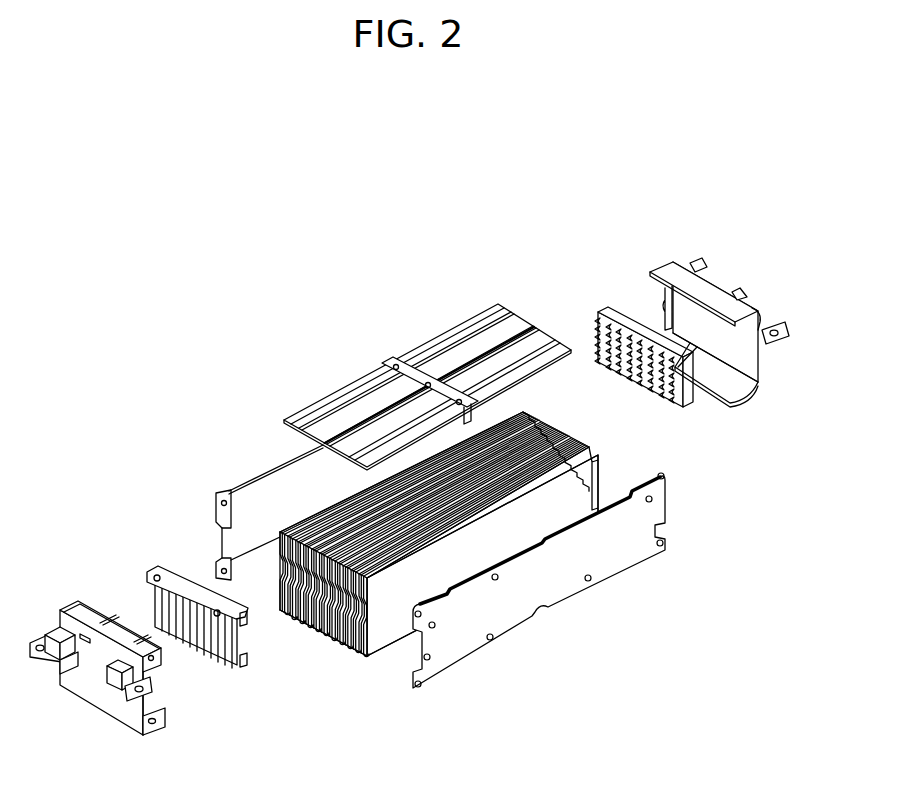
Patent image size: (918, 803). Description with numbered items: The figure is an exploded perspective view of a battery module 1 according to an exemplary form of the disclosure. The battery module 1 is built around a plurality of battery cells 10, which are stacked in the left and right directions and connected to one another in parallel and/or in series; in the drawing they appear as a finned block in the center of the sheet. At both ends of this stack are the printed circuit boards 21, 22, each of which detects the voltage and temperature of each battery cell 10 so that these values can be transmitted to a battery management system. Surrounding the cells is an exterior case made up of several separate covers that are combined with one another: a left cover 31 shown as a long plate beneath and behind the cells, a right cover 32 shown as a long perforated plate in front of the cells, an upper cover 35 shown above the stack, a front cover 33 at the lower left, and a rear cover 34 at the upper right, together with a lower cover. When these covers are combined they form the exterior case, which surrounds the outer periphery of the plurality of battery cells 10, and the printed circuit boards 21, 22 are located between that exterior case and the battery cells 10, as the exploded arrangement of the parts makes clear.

The battery module 1 is at (237, 291).
The battery cells 10 is at (328, 531).
The printed circuit board 21 is at (238, 668).
The printed circuit board 22 is at (687, 403).
The left cover 31 is at (272, 473).
The right cover 32 is at (503, 617).
The front cover 33 is at (98, 703).
The rear cover 34 is at (747, 398).
The upper cover 35 is at (422, 343).